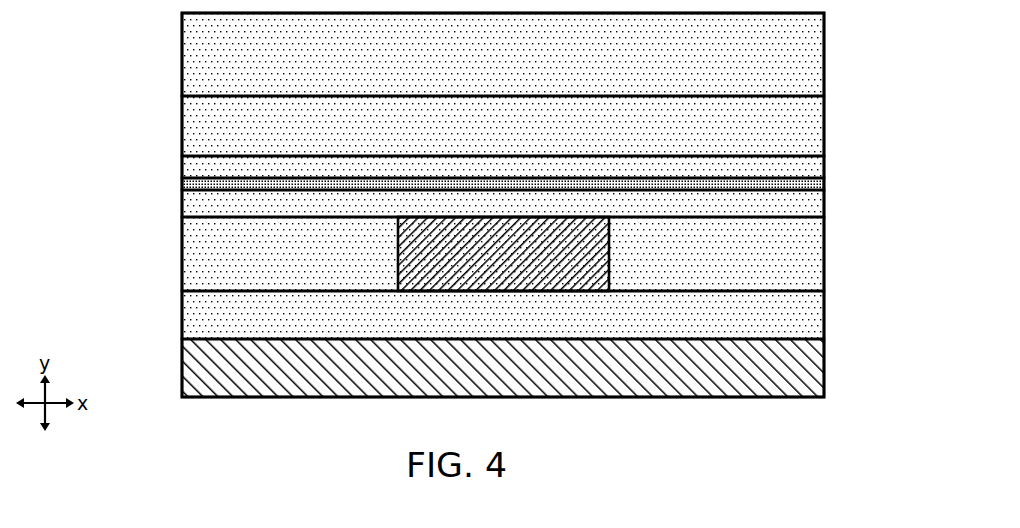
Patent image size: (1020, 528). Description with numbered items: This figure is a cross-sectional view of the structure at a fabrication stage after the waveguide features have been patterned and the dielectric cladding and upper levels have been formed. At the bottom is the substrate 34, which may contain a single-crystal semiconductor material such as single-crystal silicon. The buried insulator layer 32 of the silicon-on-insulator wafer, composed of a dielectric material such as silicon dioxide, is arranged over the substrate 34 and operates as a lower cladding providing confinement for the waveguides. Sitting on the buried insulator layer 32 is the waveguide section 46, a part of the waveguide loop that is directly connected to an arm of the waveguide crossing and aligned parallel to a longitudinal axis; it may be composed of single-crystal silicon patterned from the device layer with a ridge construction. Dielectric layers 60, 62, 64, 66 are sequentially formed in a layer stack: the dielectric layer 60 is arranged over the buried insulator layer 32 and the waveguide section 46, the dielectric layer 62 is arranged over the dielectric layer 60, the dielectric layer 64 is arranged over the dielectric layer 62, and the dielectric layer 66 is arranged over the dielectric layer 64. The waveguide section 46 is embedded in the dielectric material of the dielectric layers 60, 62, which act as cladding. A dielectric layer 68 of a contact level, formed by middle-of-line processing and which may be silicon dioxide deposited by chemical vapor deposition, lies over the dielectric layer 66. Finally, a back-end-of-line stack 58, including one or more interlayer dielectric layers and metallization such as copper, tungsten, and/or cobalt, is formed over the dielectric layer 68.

The back-end-of-line stack 58 is at (782, 45).
The dielectric layer 68 is at (199, 119).
The dielectric layer 66 is at (788, 172).
The dielectric layer 64 is at (199, 182).
The dielectric layer 62 is at (788, 208).
The dielectric layer 60 is at (199, 270).
The waveguide section 46 is at (548, 264).
The buried insulator layer 32 is at (199, 315).
The substrate 34 is at (199, 377).